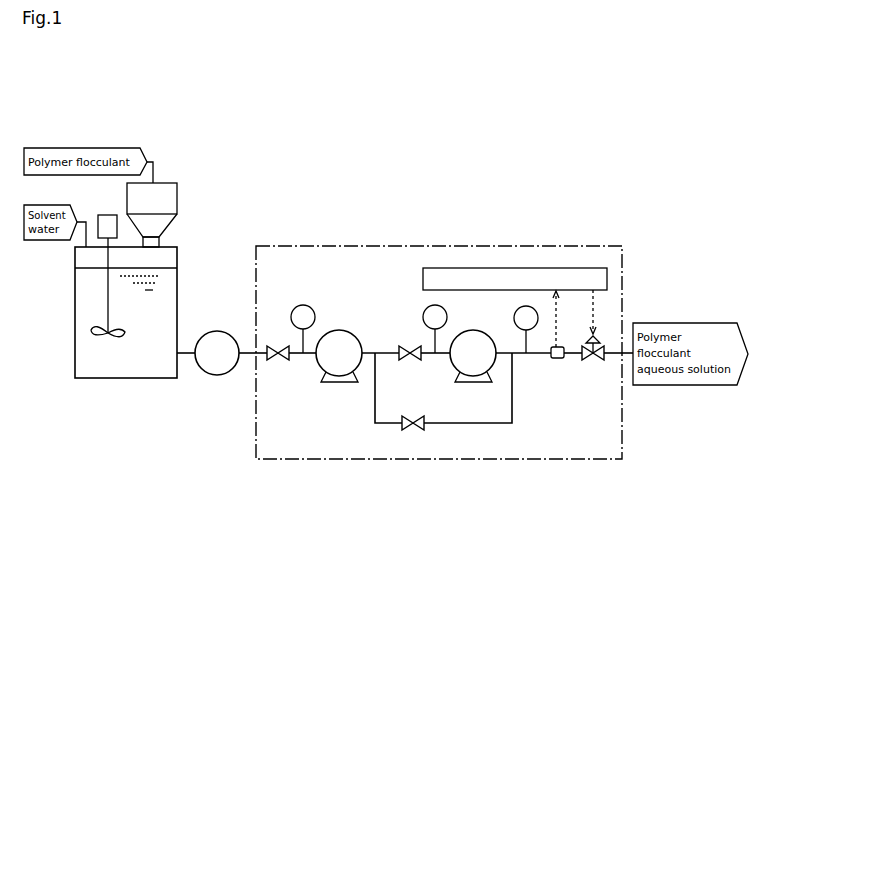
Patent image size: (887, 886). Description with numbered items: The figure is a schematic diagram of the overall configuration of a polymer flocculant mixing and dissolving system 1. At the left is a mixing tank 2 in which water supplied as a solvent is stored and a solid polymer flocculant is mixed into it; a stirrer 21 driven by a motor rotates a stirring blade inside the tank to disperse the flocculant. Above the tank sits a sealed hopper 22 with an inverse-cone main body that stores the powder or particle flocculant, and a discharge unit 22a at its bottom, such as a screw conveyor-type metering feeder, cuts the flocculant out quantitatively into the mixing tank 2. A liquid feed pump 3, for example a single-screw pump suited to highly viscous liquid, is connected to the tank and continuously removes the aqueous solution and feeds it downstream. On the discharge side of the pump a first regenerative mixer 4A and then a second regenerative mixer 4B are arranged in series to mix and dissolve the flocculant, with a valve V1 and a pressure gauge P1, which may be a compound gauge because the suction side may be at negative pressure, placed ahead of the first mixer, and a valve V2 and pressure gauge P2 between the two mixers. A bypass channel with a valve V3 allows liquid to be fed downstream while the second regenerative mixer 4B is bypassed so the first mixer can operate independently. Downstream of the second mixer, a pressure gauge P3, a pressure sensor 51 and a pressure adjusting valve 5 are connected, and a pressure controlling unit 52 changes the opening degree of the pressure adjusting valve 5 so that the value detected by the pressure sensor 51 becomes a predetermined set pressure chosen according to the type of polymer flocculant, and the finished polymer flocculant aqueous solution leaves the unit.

The mixing and dissolving system 1 is at (661, 184).
The mixing tank 2 is at (98, 380).
The stirrer 21 is at (98, 307).
The hopper 22 is at (177, 199).
The discharge unit 22a is at (162, 240).
The liquid feed pump 3 is at (210, 378).
The first regenerative mixer 4A is at (347, 332).
The second regenerative mixer 4B is at (482, 332).
The pressure adjusting valve 5 is at (597, 360).
The pressure sensor 51 is at (553, 358).
The pressure controlling unit 52 is at (578, 268).
The valve V1 is at (291, 365).
The valve V2 is at (424, 365).
The valve V3 is at (443, 403).
The pressure gauge P1 is at (303, 329).
The pressure gauge P2 is at (435, 329).
The pressure gauge P3 is at (526, 329).